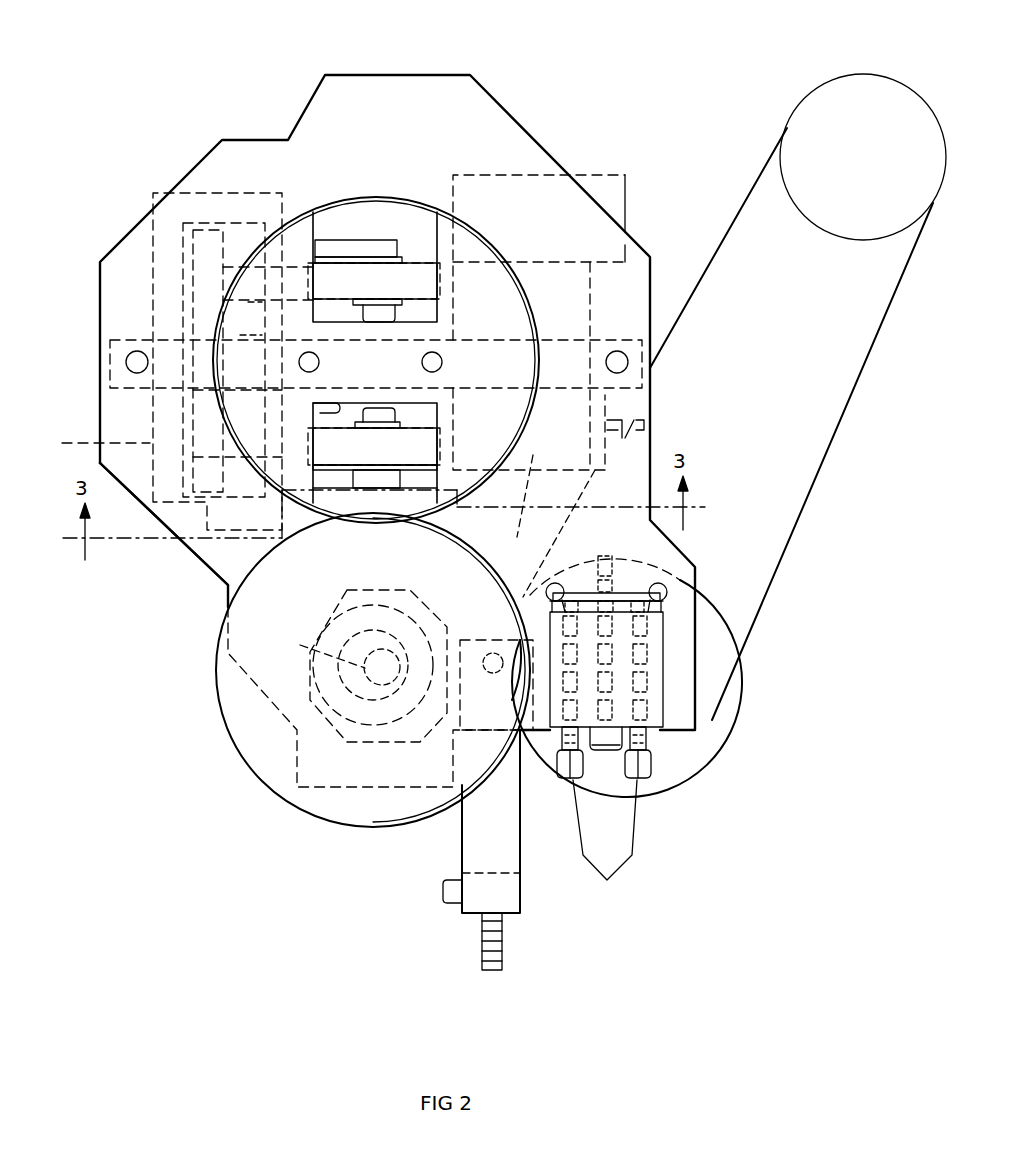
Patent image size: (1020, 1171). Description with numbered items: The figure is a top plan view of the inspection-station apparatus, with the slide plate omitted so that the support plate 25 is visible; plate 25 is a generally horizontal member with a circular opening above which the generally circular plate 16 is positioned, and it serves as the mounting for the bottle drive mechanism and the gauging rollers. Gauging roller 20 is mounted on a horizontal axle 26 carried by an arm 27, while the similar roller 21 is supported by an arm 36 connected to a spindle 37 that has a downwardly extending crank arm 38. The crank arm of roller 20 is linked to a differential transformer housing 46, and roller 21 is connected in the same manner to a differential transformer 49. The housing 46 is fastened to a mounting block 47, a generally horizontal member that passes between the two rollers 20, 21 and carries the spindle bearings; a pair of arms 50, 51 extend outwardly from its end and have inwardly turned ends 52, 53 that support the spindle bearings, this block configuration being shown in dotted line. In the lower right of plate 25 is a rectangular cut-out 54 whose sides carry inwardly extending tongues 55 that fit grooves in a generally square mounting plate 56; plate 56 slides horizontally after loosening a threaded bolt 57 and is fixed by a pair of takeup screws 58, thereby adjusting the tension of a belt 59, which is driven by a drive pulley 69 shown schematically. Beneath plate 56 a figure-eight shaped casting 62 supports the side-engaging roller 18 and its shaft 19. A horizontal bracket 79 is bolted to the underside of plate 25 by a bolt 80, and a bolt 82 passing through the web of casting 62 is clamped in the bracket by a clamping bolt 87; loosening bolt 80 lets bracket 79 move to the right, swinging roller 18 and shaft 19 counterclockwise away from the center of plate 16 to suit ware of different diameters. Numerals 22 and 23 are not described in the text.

The plate 16 is at (480, 277).
The side-engaging roller 18 is at (255, 742).
The shaft 19 is at (300, 645).
The gauging roller 20 is at (374, 458).
The roller 21 is at (374, 292).
The recess 22 is at (318, 410).
The disc rim 23 is at (418, 205).
The support plate 25 is at (237, 152).
The horizontal axle 26 is at (380, 408).
The arm 27 is at (340, 478).
The arm 36 is at (360, 250).
The spindle 37 is at (262, 305).
The crank arm 38 is at (250, 334).
The differential transformer housing 46 is at (533, 545).
The mounting block 47 is at (655, 346).
The differential transformer 49 is at (577, 290).
The arm 50 is at (153, 313).
The arm 51 is at (91, 440).
The inwardly turned end 52 is at (198, 522).
The inwardly turned end 53 is at (258, 212).
The rectangular cut-out 54 is at (667, 590).
The tongues 55 is at (665, 614).
The mounting plate 56 is at (655, 683).
The threaded bolt 57 is at (604, 750).
The takeup screws 58 is at (605, 842).
The belt 59 is at (812, 492).
The casting 62 is at (345, 742).
The drive pulley 69 is at (863, 97).
The horizontal bracket 79 is at (491, 821).
The bolt 80 is at (488, 650).
The bolt 82 is at (482, 960).
The clamping bolt 87 is at (443, 893).